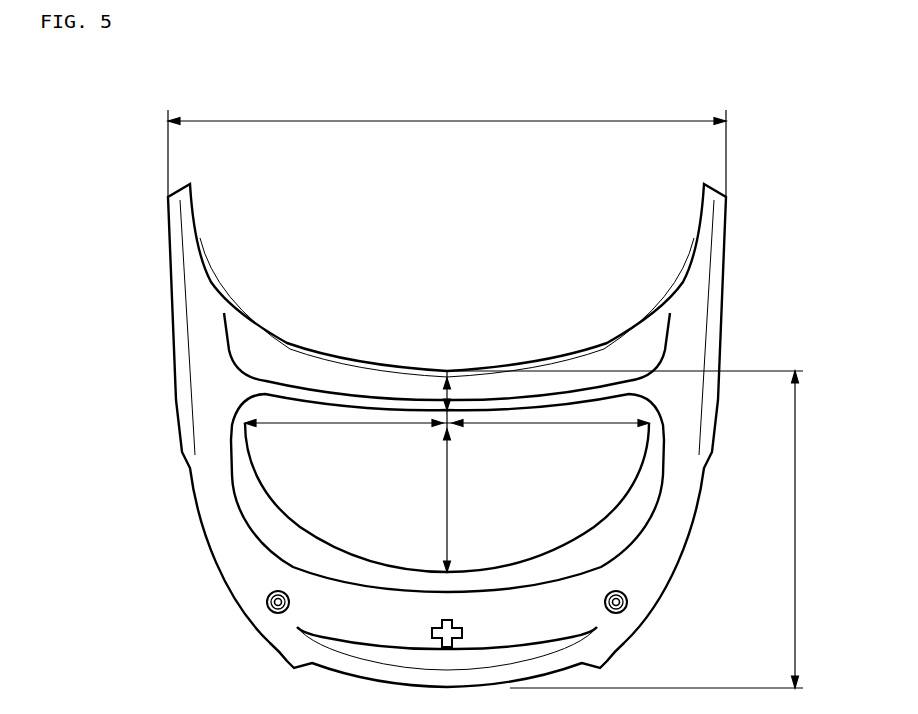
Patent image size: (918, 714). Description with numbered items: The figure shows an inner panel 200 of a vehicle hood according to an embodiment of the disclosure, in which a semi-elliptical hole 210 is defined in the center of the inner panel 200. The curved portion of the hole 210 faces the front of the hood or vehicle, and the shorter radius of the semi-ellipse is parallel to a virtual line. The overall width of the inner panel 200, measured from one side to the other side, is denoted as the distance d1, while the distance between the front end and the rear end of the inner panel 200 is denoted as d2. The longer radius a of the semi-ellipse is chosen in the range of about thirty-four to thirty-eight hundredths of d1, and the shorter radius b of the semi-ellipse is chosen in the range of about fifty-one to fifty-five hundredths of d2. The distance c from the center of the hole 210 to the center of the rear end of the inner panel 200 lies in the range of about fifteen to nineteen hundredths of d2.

The inner panel 200 is at (207, 350).
The semi-elliptical hole 210 is at (319, 510).
The distance between one side and the other side of the inner panel d1 is at (447, 131).
The distance between front end and rear end of the inner panel d2 is at (645, 529).
The longer radius of the semi-ellipse a is at (447, 443).
The shorter radius of the semi-ellipse b is at (457, 497).
The distance from the center of the hole to the center of the rear end of the inner c is at (458, 397).